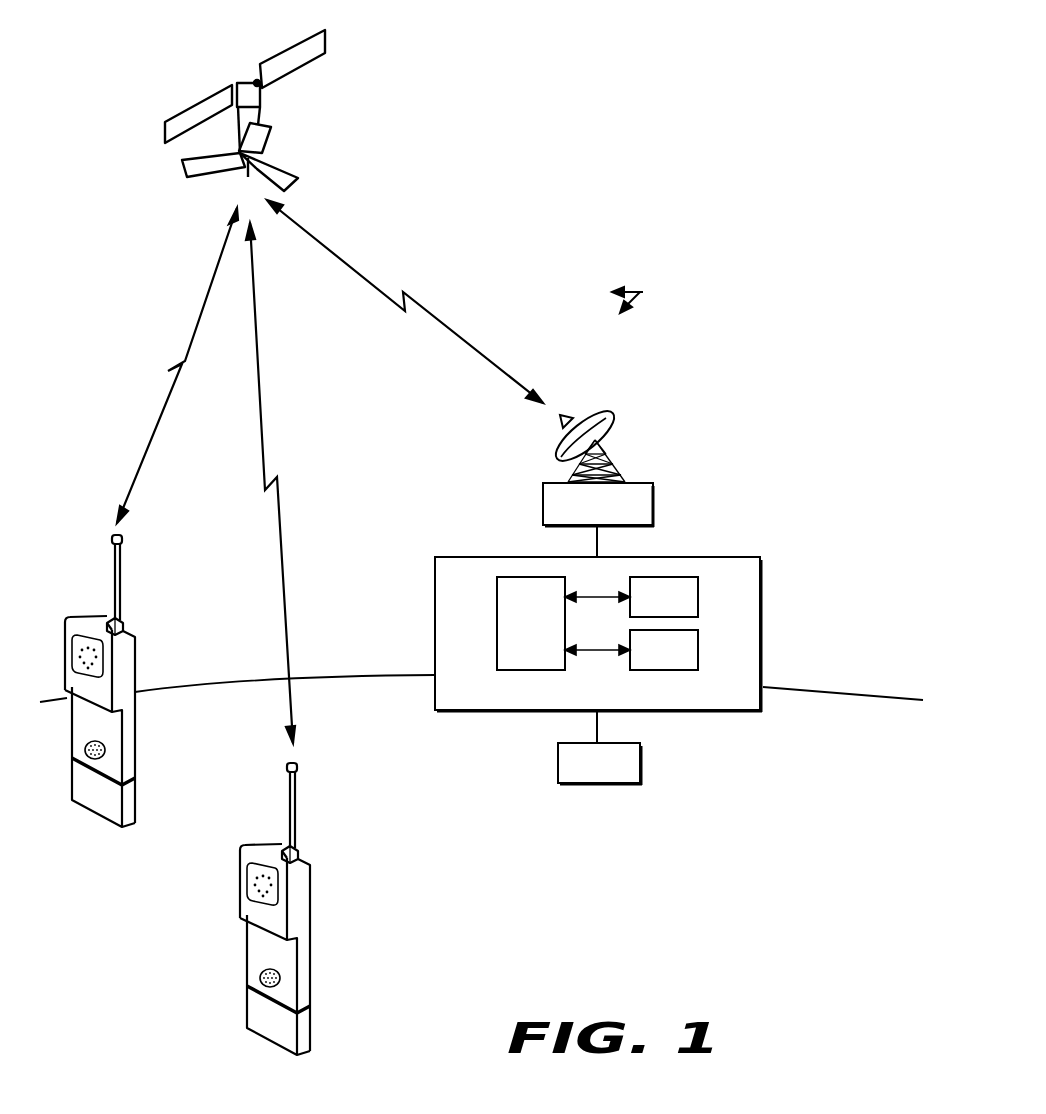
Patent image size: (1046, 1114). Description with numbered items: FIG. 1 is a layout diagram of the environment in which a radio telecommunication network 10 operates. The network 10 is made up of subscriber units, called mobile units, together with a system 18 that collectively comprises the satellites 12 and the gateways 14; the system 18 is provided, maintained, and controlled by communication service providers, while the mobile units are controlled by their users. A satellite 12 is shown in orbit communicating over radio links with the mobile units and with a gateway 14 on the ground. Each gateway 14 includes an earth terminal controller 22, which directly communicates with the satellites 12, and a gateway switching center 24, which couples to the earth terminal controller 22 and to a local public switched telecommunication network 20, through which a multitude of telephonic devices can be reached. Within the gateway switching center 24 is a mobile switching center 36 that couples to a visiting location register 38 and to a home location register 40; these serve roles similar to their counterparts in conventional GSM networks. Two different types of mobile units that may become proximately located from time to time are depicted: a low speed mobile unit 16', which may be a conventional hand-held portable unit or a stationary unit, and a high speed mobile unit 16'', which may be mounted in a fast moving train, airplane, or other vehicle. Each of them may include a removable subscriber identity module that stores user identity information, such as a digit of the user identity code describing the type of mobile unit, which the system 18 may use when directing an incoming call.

The radio telecommunication network 10 is at (664, 997).
The satellite 12 is at (230, 88).
The gateway 14 is at (672, 420).
The low speed mobile unit 16' is at (131, 736).
The high speed mobile unit 16'' is at (308, 964).
The system 18 is at (642, 293).
The public switched telecommunication network 20 is at (558, 762).
The earth terminal controller 22 is at (543, 500).
The gateway switching center 24 is at (435, 582).
The mobile switching center 36 is at (497, 622).
The visiting location register 38 is at (699, 597).
The home location register 40 is at (699, 650).